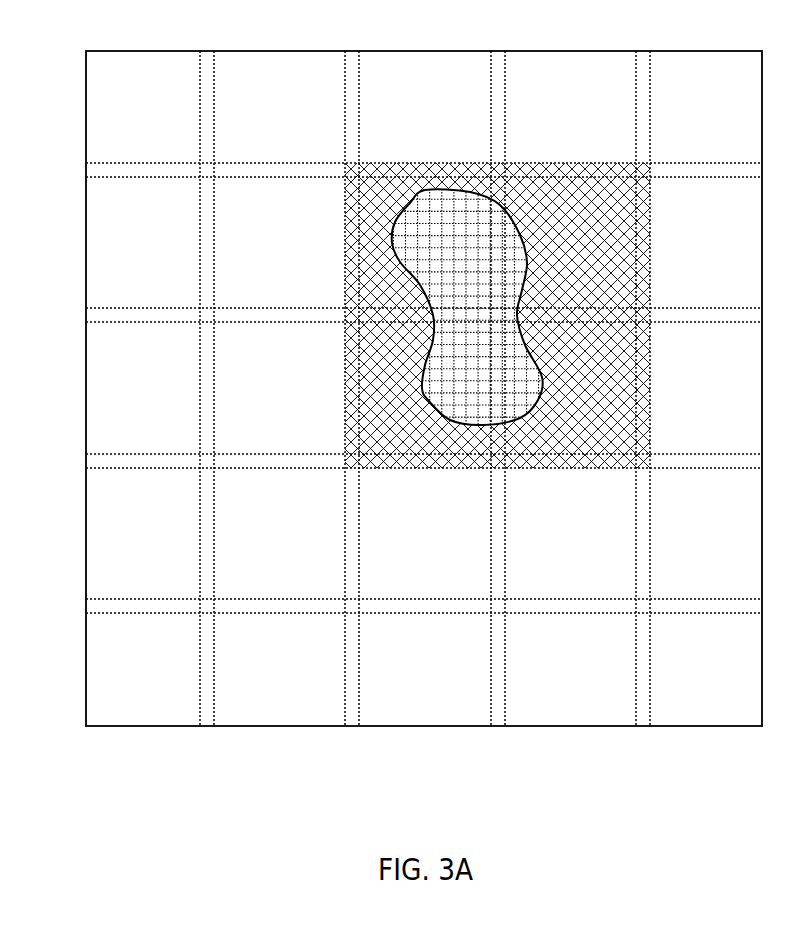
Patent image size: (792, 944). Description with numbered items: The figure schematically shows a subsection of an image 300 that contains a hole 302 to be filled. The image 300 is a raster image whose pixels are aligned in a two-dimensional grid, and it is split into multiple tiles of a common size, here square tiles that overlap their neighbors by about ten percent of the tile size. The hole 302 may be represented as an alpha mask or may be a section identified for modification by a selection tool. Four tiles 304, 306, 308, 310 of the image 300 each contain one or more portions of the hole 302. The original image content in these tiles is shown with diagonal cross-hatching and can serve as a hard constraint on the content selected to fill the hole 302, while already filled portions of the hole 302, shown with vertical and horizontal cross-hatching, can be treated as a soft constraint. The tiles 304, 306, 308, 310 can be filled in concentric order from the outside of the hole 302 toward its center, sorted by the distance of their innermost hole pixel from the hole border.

The image 300 is at (423, 51).
The hole 302 is at (445, 189).
The tile 304 is at (650, 248).
The tile 306 is at (650, 397).
The tile 308 is at (345, 397).
The tile 310 is at (345, 248).